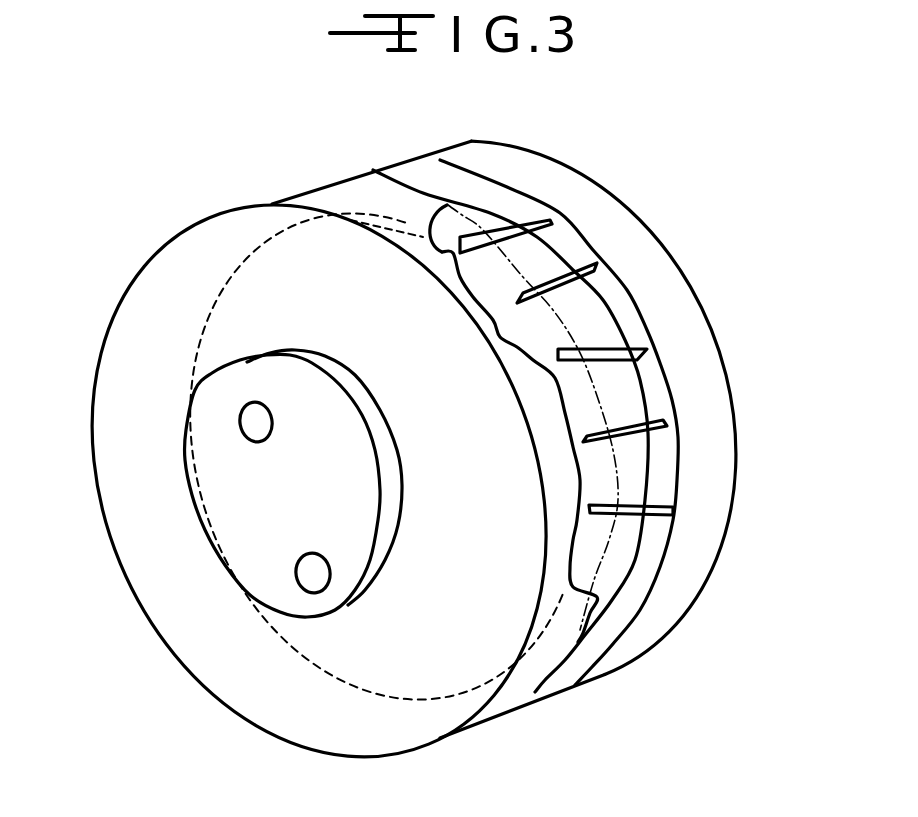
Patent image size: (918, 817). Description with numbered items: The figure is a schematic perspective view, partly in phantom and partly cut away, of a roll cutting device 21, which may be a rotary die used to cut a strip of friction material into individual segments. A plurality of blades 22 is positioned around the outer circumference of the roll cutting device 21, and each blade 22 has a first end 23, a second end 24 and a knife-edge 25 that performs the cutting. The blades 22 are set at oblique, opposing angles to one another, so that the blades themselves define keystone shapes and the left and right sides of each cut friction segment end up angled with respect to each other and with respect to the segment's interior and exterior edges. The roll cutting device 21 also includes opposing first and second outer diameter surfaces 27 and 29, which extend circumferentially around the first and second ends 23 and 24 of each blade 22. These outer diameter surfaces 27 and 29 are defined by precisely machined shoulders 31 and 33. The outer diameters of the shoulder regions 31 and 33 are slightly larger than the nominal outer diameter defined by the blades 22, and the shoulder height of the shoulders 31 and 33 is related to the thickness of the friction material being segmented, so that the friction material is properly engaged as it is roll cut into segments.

The roll cutting device 21 is at (400, 461).
The blade 22 is at (650, 497).
The first end 23 is at (587, 450).
The second end 24 is at (656, 410).
The knife-edge 25 is at (680, 438).
The first outer diameter surface 27 is at (157, 250).
The second outer diameter surface 29 is at (547, 155).
The shoulder 31 is at (377, 178).
The shoulder 33 is at (627, 288).